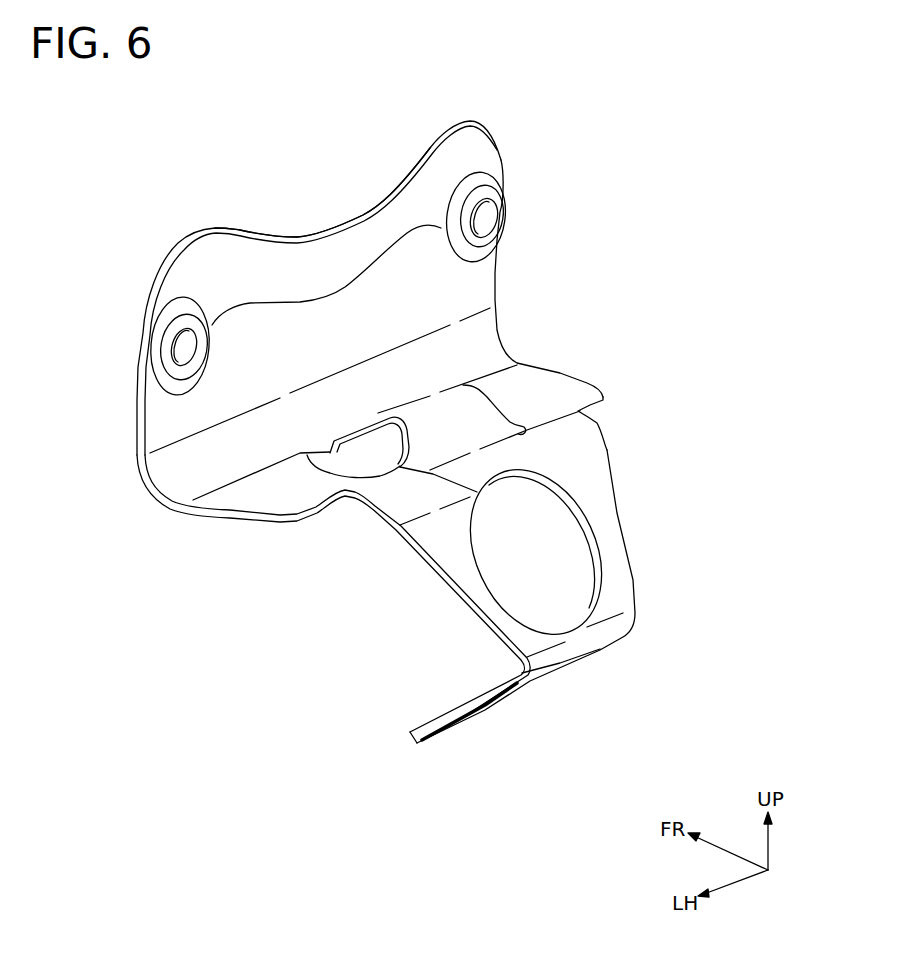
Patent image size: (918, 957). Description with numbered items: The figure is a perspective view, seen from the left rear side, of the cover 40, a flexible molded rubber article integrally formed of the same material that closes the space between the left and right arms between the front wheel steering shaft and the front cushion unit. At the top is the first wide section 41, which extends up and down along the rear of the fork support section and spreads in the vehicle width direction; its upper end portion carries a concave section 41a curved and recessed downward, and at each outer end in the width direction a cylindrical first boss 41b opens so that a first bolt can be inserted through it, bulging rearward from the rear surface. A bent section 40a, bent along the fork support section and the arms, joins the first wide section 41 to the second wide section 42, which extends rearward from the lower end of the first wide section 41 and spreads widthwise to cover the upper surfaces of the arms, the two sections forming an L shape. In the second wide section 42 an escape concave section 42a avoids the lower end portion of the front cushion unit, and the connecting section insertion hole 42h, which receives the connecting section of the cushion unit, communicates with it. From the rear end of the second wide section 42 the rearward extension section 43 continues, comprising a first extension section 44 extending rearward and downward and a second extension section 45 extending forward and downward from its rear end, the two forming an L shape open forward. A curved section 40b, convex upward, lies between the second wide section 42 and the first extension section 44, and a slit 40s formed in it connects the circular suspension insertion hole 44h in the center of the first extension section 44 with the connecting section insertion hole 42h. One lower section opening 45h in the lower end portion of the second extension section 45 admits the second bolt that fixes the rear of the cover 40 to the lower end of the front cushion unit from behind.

The cover 40 is at (620, 137).
The first wide section 41 is at (476, 278).
The concave section 41a is at (339, 228).
The first boss 41b is at (172, 346).
The bent section 40a is at (487, 340).
The second wide section 42 is at (550, 385).
The curved section 40b is at (573, 430).
The slit 40s is at (445, 478).
The escape concave section 42a is at (394, 432).
The connecting section insertion hole 42h is at (355, 463).
The rearward extension section 43 is at (745, 540).
The first extension section 44 is at (622, 563).
The suspension insertion hole 44h is at (550, 557).
The second extension section 45 is at (503, 707).
The lower section opening 45h is at (449, 730).